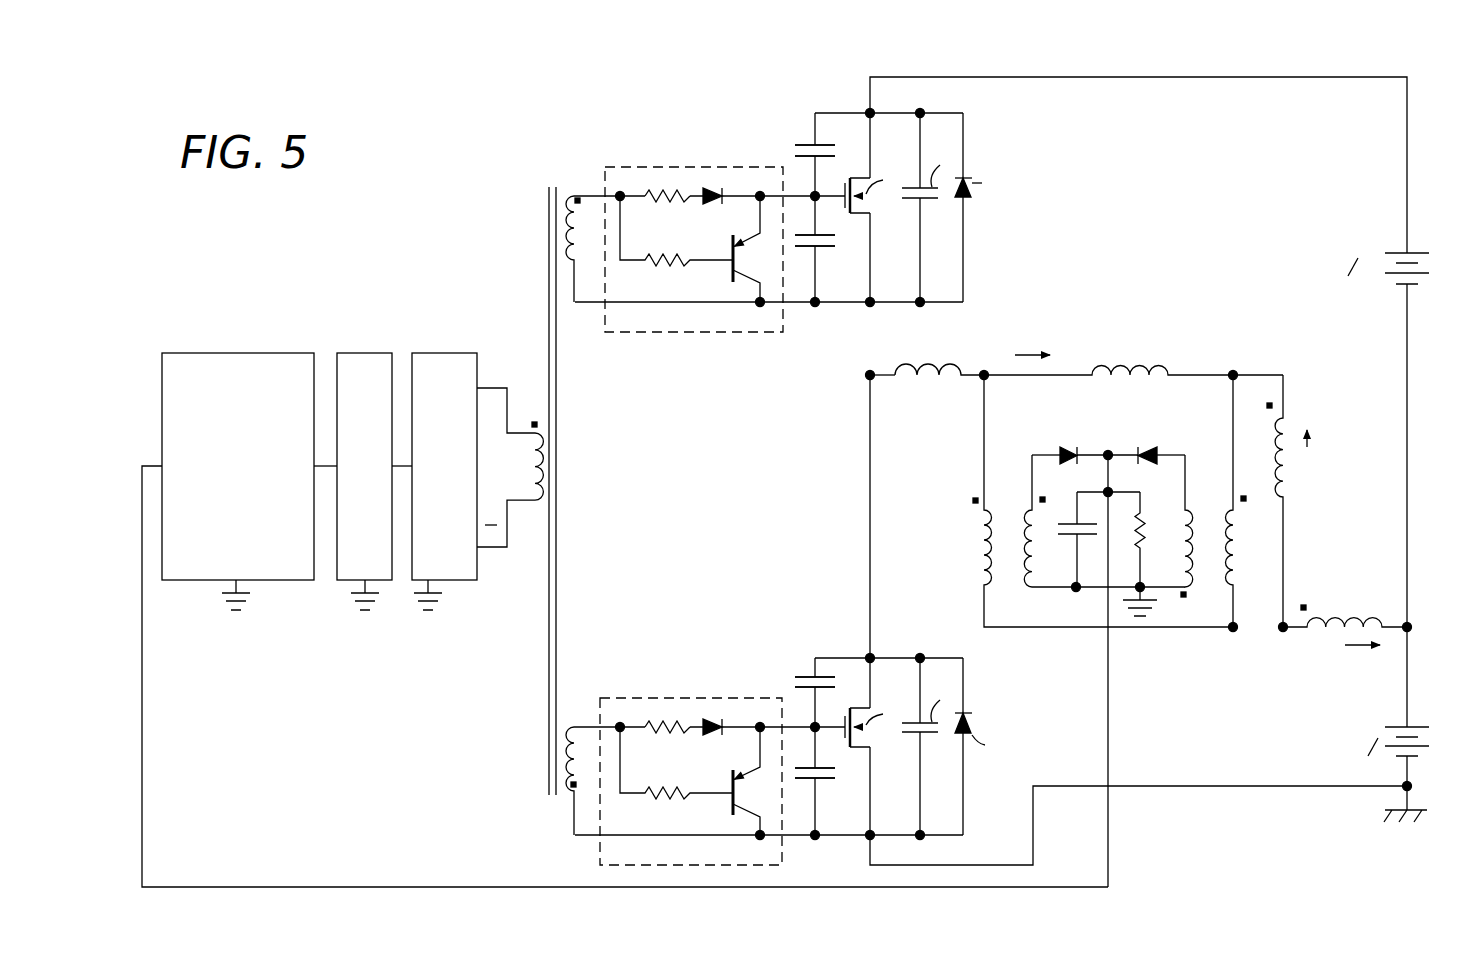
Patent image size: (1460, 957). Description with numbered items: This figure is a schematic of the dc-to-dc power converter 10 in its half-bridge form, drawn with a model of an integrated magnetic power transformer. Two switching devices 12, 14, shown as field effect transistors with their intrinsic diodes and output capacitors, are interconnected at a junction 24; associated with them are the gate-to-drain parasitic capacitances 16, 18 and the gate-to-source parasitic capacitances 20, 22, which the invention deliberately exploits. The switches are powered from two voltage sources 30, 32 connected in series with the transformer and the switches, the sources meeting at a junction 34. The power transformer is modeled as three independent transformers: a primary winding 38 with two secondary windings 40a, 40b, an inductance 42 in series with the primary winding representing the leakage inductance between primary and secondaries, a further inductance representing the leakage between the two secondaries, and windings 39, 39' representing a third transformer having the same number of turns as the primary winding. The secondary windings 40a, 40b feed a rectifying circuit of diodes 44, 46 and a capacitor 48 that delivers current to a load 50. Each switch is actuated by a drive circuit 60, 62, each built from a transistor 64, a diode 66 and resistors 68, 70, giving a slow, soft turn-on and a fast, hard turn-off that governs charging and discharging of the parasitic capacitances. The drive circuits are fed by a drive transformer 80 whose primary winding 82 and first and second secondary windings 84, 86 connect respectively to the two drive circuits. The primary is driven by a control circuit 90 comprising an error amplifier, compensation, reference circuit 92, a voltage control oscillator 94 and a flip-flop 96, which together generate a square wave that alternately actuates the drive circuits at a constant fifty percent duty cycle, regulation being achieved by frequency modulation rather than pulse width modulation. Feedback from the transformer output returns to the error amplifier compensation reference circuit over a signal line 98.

The dc-to-dc power converter 10 is at (684, 457).
The switching device 12 is at (1008, 123).
The switching device 14 is at (898, 633).
The parasitic capacitance 16 is at (806, 145).
The parasitic capacitance 18 is at (806, 677).
The parasitic capacitance 20 is at (825, 250).
The parasitic capacitance 22 is at (825, 782).
The junction 24 is at (866, 375).
The voltage source 30 is at (1398, 253).
The voltage source 32 is at (1398, 727).
The junction 34 is at (1403, 624).
The primary winding 38 is at (986, 555).
The winding 39 is at (1288, 503).
The winding 39' is at (1345, 612).
The secondary winding 40a is at (1198, 512).
The secondary winding 40b is at (1022, 512).
The inductance 42 is at (930, 364).
The diode 44 is at (1062, 453).
The diode 46 is at (1157, 453).
The capacitor 48 is at (1068, 536).
The load 50 is at (1142, 516).
The drive circuit 60 is at (670, 160).
The drive circuit 62 is at (672, 691).
The transistor 64 is at (729, 270).
The diode 66 is at (712, 206).
The resistor 68 is at (663, 206).
The resistor 70 is at (653, 265).
The drive transformer 80 is at (570, 446).
The primary winding 82 is at (533, 466).
The first secondary winding 84 is at (560, 226).
The second secondary winding 86 is at (560, 755).
The control circuit 90 is at (324, 310).
The error amplifier, compensation, reference circuit 92 is at (207, 370).
The voltage control oscillator 94 is at (367, 360).
The flip-flop 96 is at (438, 366).
The signal line 98 is at (345, 887).